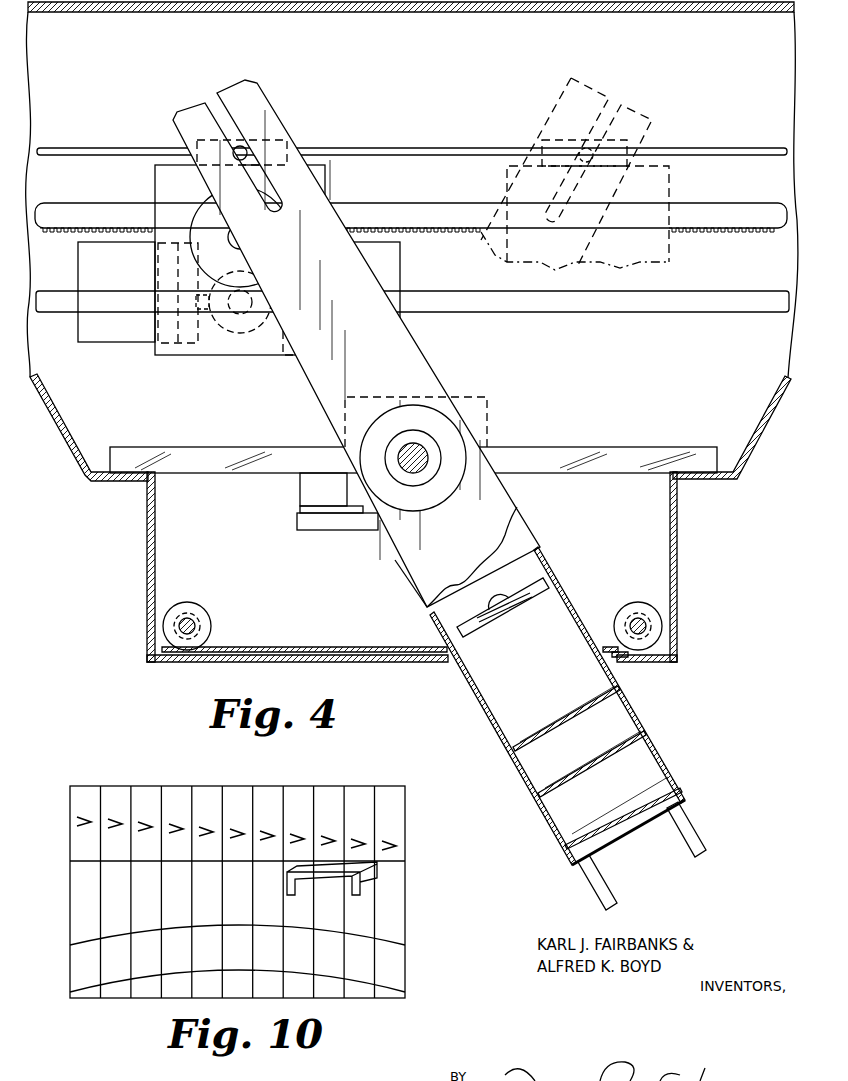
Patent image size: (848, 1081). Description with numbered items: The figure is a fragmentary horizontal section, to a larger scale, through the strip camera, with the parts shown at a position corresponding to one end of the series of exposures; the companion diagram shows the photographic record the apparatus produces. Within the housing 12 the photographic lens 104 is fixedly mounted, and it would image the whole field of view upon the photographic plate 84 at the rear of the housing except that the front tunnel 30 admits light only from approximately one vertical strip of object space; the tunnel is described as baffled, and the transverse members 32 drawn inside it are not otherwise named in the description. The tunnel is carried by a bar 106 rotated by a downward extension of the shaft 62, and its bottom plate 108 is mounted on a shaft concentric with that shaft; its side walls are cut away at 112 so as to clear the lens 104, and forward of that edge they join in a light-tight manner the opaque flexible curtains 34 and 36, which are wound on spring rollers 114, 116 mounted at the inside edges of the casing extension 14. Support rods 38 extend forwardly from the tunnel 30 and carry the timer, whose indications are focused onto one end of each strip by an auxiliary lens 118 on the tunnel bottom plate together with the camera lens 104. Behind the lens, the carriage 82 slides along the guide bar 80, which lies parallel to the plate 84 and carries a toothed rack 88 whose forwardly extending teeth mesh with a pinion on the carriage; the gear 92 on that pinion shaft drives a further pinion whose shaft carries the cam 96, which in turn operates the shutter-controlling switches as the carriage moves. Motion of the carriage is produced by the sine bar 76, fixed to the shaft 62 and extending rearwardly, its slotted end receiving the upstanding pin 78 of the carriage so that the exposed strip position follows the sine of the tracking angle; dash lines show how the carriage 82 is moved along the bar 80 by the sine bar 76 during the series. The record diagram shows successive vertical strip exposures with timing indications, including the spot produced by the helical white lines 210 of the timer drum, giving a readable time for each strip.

In FIG. 4, the housing 12 is at (132, 5).
In FIG. 4, the casing extension 14 is at (138, 557).
In FIG. 4, the front tunnel 30 is at (487, 720).
In FIG. 4, the baffle plates 32 is at (628, 735).
In FIG. 4, the opaque flexible curtain 34 is at (308, 648).
In FIG. 4, the opaque flexible curtain 36 is at (624, 660).
In FIG. 4, the support rods 38 is at (690, 848).
In FIG. 4, the shaft 62 is at (420, 456).
In FIG. 4, the sine bar 76 is at (405, 352).
In FIG. 4, the pin 78 is at (245, 147).
In FIG. 4, the guide bar 80 is at (456, 206).
In FIG. 4, the carriage 82 is at (212, 352).
In FIG. 4, the photographic plate 84 is at (437, 145).
In FIG. 4, the toothed rack 88 is at (705, 232).
In FIG. 4, the gear 92 is at (193, 222).
In FIG. 4, the cam 96 is at (232, 327).
In FIG. 4, the photographic lens 104 is at (315, 493).
In FIG. 4, the bar 106 is at (412, 568).
In FIG. 4, the bottom plate 108 is at (548, 684).
In FIG. 4, the cut-away edge of tunnel side walls 112 is at (540, 548).
In FIG. 4, the spring roller 114 is at (195, 620).
In FIG. 4, the spring roller 116 is at (652, 604).
In FIG. 4, the auxiliary lens 118 is at (505, 600).
In FIG. 10, the helical white lines 210 is at (82, 956).